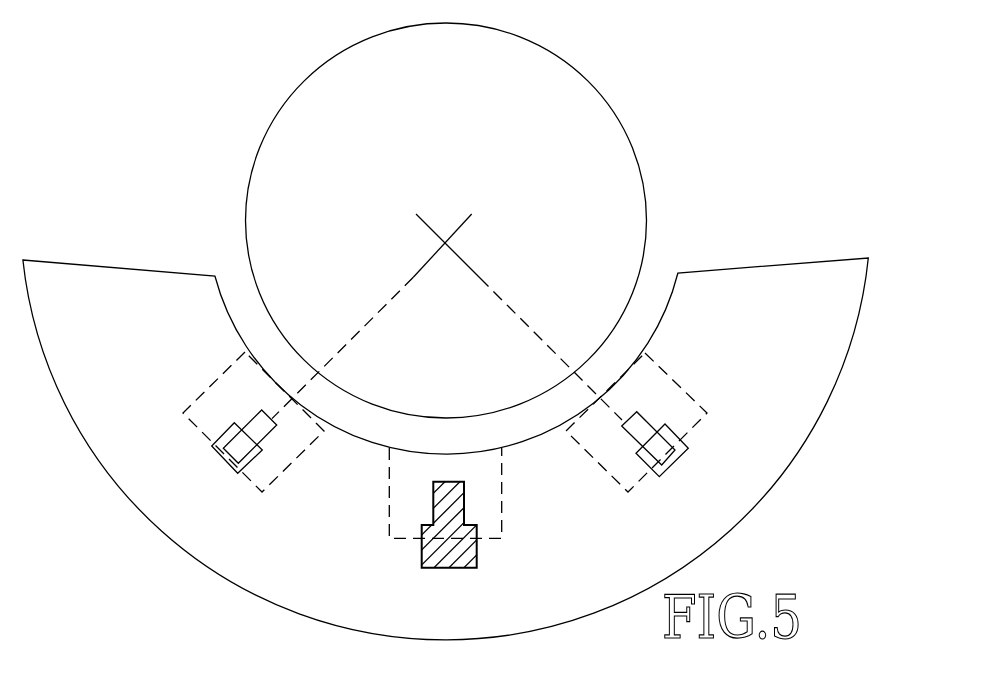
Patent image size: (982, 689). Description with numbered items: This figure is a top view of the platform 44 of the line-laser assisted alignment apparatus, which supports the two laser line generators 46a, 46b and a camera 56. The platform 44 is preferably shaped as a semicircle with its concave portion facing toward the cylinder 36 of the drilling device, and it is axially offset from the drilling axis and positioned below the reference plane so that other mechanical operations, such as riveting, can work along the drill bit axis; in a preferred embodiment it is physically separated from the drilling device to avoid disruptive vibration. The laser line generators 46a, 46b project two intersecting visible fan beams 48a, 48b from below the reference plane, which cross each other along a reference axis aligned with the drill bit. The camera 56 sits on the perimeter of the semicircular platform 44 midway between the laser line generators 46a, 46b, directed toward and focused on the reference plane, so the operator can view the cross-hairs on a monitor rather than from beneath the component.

The cylinder 36 is at (644, 138).
The platform 44 is at (857, 337).
The laser line generator 46a is at (677, 475).
The laser line generator 46b is at (235, 478).
The visible fan beam 48a is at (583, 388).
The visible fan beam 48b is at (312, 372).
The camera 56 is at (480, 563).